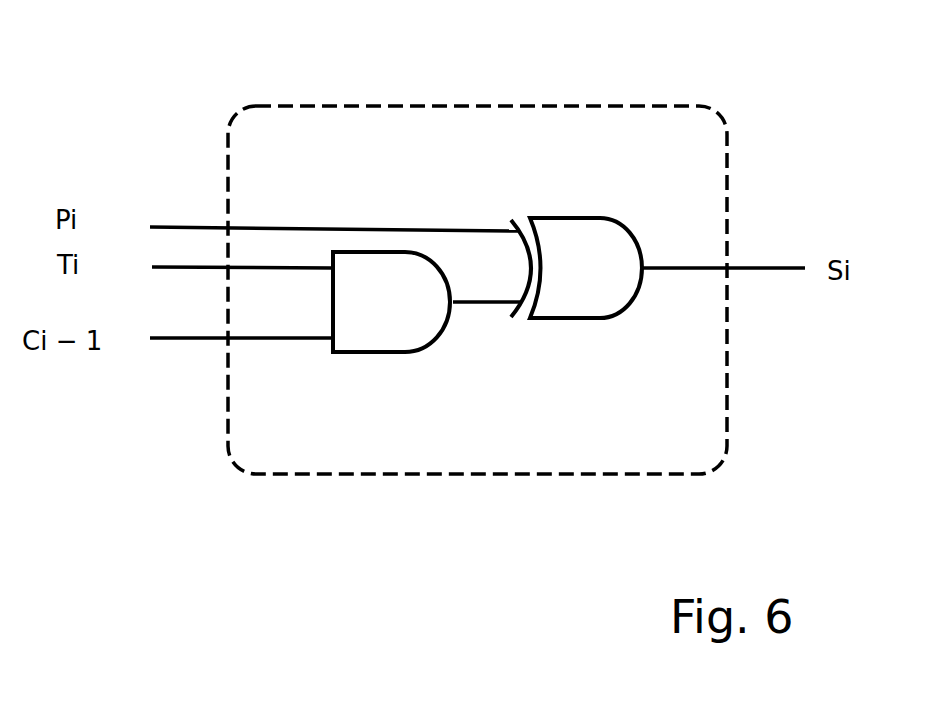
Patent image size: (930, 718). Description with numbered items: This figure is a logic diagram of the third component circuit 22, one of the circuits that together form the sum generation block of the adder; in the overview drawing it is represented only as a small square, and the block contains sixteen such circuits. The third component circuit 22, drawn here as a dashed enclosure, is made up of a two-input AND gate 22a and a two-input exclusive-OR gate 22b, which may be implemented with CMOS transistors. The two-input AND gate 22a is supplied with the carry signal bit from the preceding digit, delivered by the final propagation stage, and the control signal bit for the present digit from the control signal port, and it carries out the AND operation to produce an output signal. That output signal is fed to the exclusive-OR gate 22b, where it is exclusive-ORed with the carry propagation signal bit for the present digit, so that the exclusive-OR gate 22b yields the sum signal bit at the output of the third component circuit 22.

The third component circuit 22 is at (705, 111).
The two-input AND gate 22a is at (370, 334).
The exclusive-OR gate 22b is at (587, 300).